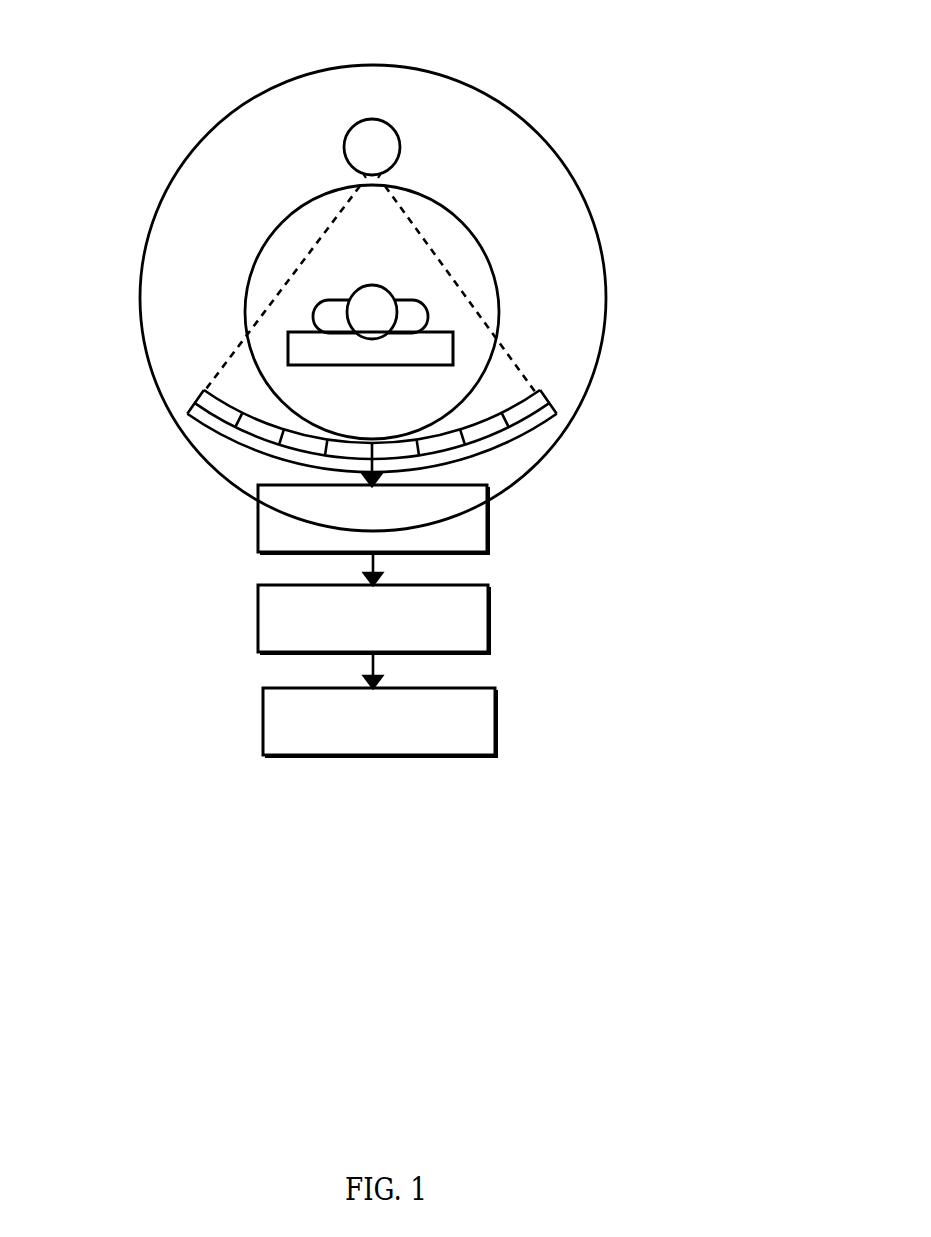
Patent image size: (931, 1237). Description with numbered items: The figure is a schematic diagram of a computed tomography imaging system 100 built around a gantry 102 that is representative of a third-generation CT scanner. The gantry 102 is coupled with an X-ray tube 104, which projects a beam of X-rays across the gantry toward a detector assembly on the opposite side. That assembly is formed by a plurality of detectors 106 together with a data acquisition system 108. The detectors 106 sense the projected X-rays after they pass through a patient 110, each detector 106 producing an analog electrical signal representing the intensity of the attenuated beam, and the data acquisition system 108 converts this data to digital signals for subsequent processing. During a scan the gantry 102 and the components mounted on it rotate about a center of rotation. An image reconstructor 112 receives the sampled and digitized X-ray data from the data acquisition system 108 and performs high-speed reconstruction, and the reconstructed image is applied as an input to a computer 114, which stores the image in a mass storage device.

The computed tomography imaging system 100 is at (608, 587).
The gantry 102 is at (233, 136).
The X-ray tube 104 is at (392, 125).
The detectors 106 is at (192, 428).
The data acquisition system 108 is at (258, 530).
The patient 110 is at (372, 287).
The image reconstructor 112 is at (258, 622).
The computer 114 is at (263, 725).